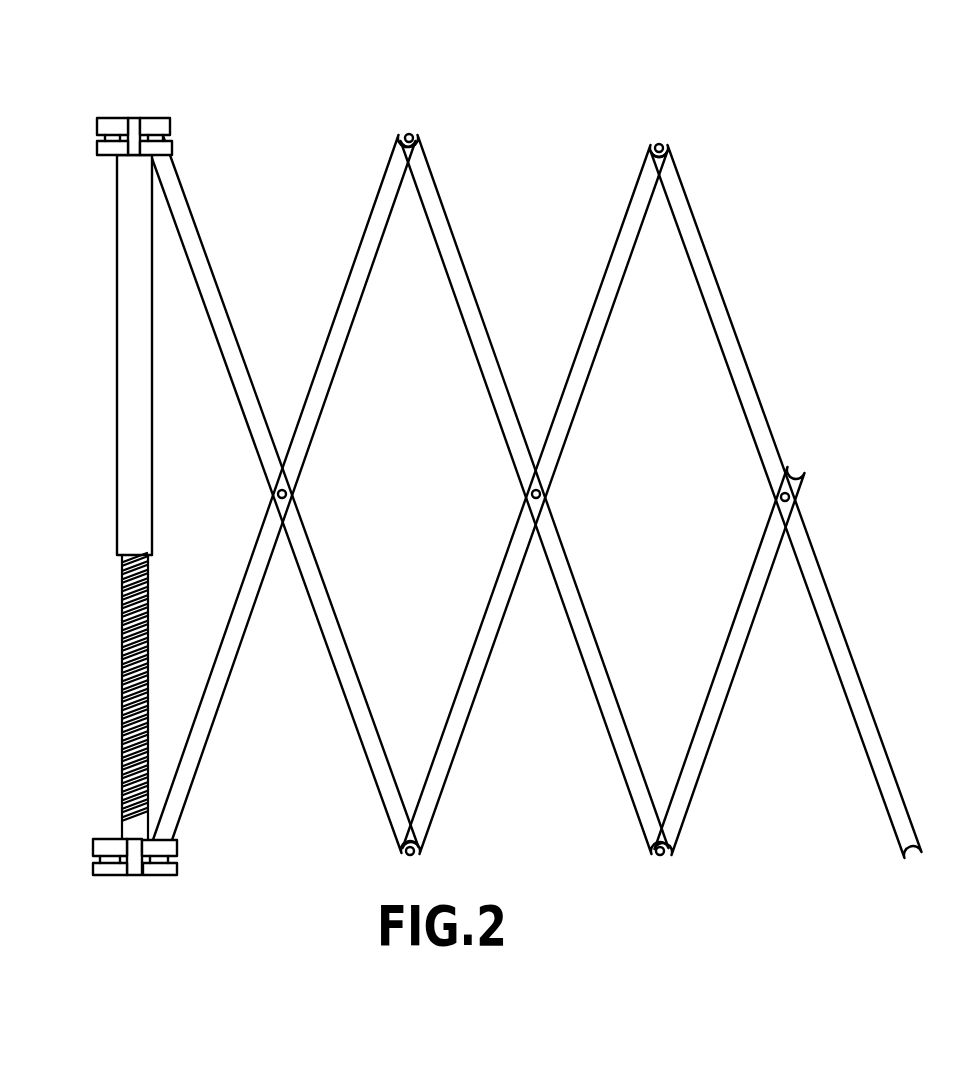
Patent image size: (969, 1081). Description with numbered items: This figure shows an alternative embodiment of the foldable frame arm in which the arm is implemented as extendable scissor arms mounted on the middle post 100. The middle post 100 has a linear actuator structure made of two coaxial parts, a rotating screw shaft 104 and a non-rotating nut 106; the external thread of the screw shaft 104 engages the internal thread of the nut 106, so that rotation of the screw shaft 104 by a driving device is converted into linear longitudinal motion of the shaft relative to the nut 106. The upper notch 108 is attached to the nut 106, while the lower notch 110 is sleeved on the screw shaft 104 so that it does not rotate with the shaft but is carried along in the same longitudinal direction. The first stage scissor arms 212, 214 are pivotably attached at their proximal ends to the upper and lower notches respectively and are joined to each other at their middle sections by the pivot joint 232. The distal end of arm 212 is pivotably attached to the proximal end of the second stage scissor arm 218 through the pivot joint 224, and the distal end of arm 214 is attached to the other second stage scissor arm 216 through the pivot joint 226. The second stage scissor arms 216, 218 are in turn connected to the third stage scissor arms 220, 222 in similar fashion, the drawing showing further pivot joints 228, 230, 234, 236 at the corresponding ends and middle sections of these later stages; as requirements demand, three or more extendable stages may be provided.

The middle post 100 is at (91, 453).
The rotating screw shaft 104 is at (138, 688).
The non-rotating nut 106 is at (143, 350).
The upper notch 108 is at (147, 133).
The lower notch 110 is at (160, 868).
The first stage scissor arm 212 is at (347, 308).
The first stage scissor arm 214 is at (320, 600).
The second stage scissor arm 216 is at (562, 420).
The second stage scissor arm 218 is at (585, 645).
The third stage scissor arm 220 is at (690, 775).
The third stage scissor arm 222 is at (737, 343).
The pivot joint 224 is at (408, 124).
The pivot joint 226 is at (406, 844).
The upper pivot joint 228 is at (658, 136).
The lower pivot joint 230 is at (656, 844).
The pivot joint 232 is at (285, 486).
The central pivot 234 is at (540, 486).
The central pivot 236 is at (789, 490).